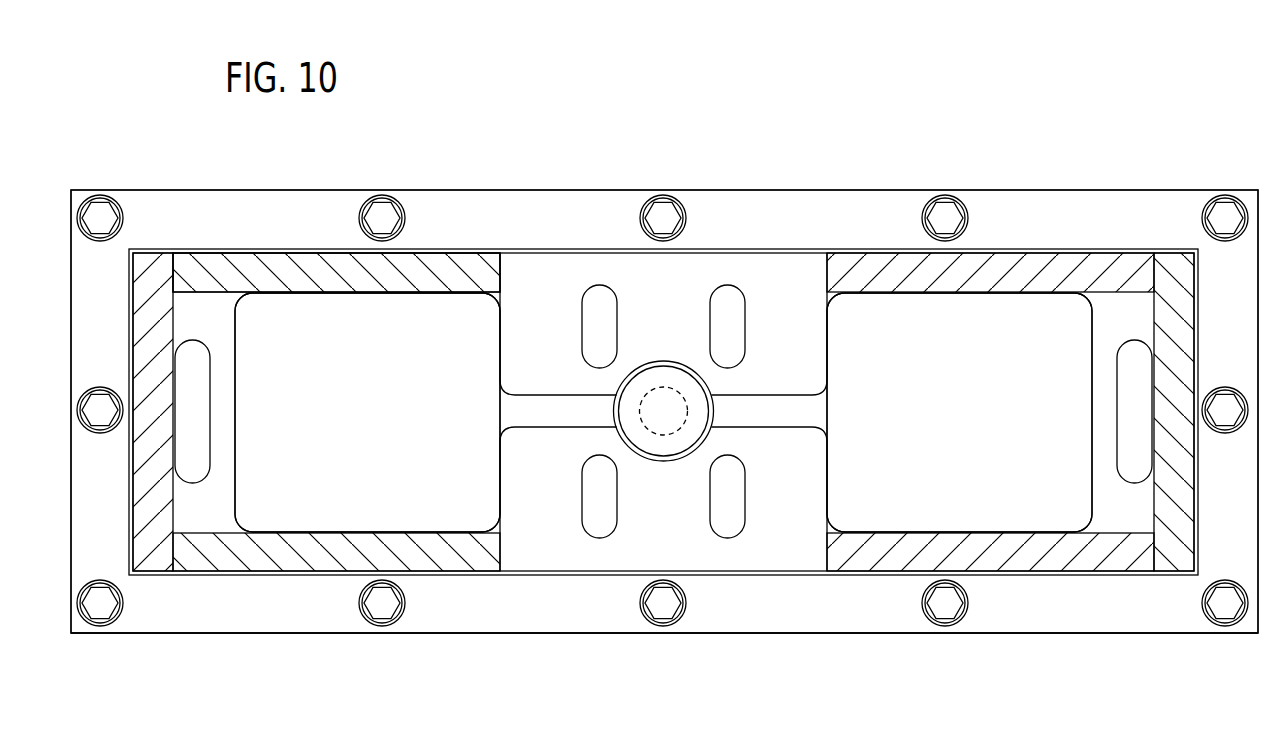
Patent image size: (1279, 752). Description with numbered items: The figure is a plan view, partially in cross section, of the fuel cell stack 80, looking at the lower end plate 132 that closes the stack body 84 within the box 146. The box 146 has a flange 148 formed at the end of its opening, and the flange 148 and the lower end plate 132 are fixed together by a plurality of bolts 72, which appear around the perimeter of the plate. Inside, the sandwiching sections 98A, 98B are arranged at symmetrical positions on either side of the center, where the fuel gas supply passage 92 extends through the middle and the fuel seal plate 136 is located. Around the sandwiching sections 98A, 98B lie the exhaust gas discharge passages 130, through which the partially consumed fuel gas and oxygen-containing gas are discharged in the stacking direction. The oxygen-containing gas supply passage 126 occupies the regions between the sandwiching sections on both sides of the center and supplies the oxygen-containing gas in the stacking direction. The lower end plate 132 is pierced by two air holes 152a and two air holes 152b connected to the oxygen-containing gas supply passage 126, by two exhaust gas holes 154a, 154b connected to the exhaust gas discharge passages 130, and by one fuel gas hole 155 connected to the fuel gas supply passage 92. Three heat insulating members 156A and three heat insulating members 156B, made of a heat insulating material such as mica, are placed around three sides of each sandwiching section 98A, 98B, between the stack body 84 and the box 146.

The fuel cell stack 80 is at (321, 158).
The oxygen-containing gas supply passage 126 is at (563, 278).
The flange 148 is at (1040, 190).
The lower end plate 132 is at (718, 634).
The box 146 is at (717, 250).
The bolt 72 is at (388, 610).
The heat insulating member 156B is at (229, 270).
The heat insulating member 156A is at (1085, 268).
The stack body 84 is at (410, 286).
The exhaust gas discharge passage 130 is at (227, 388).
The sandwiching section 98B is at (327, 322).
The sandwiching section 98A is at (866, 322).
The exhaust gas hole 154b is at (193, 420).
The exhaust gas hole 154a is at (1133, 432).
The air hole 152b is at (730, 301).
The air hole 152a is at (730, 530).
The fuel seal plate 136 is at (695, 432).
The fuel gas supply passage 92 is at (656, 411).
The fuel gas hole 155 is at (688, 388).